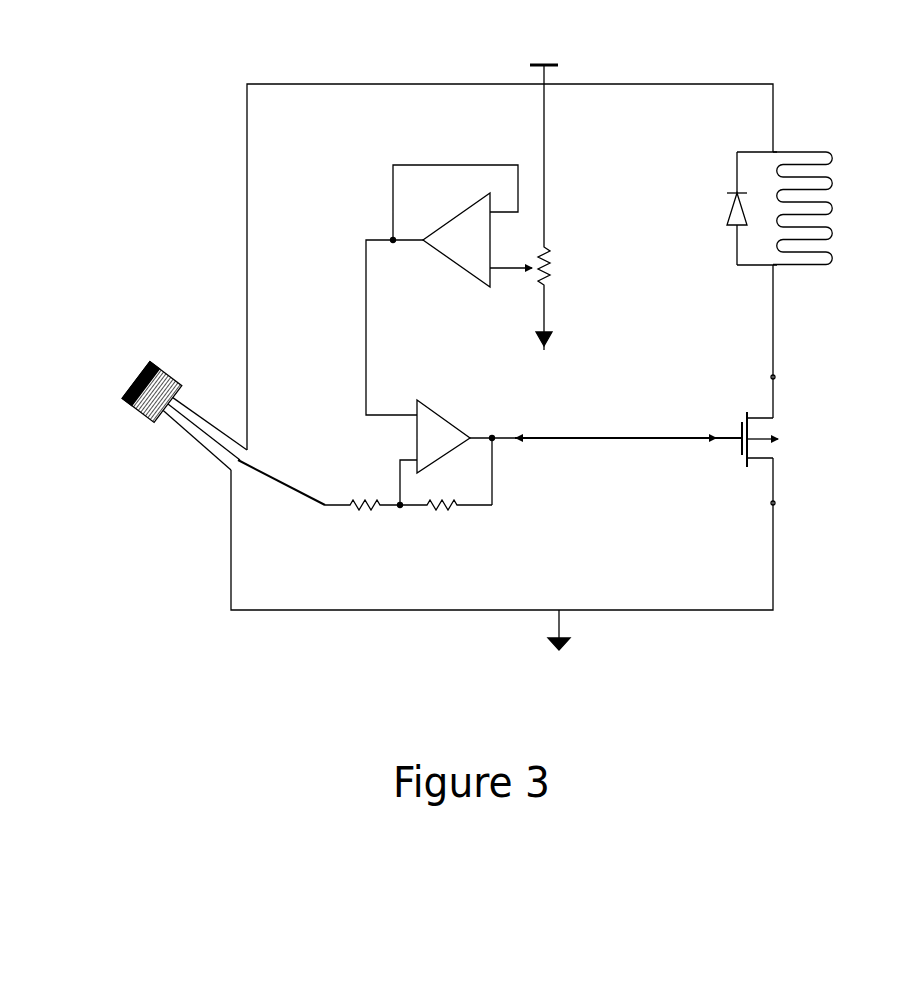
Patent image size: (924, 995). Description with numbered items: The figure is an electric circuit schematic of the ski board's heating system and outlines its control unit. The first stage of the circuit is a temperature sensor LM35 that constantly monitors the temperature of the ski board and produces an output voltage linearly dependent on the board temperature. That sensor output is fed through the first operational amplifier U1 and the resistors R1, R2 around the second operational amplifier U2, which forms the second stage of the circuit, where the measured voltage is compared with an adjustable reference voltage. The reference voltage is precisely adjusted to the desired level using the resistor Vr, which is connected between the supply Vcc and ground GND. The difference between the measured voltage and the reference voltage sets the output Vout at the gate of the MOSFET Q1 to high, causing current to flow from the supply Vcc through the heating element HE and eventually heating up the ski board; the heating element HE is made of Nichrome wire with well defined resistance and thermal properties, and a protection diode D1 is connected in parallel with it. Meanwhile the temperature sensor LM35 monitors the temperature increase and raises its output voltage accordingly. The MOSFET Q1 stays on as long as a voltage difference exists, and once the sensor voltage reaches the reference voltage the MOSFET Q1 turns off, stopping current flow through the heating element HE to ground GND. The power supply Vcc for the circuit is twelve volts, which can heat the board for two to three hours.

The supply voltage Vcc is at (544, 65).
The resistor Vr is at (533, 217).
The buffer operational amplifier U1 is at (442, 290).
The comparator operational amplifier U2 is at (457, 454).
The resistor R1 is at (362, 517).
The resistor R2 is at (446, 517).
The output voltage Vout is at (628, 431).
The MOSFET as switch Q1 is at (802, 450).
The protection diode D1 is at (735, 228).
The heating element HE is at (843, 208).
The temperature sensor LM35 is at (201, 448).
The ground GND is at (586, 635).